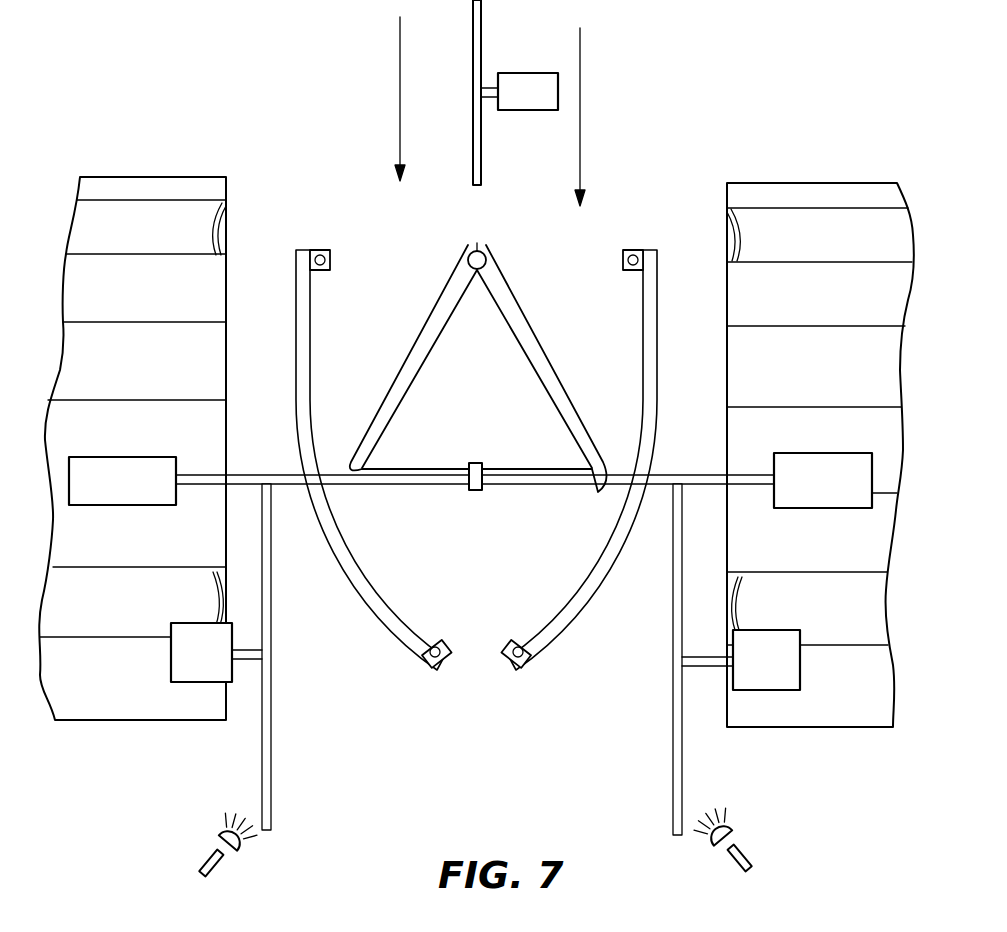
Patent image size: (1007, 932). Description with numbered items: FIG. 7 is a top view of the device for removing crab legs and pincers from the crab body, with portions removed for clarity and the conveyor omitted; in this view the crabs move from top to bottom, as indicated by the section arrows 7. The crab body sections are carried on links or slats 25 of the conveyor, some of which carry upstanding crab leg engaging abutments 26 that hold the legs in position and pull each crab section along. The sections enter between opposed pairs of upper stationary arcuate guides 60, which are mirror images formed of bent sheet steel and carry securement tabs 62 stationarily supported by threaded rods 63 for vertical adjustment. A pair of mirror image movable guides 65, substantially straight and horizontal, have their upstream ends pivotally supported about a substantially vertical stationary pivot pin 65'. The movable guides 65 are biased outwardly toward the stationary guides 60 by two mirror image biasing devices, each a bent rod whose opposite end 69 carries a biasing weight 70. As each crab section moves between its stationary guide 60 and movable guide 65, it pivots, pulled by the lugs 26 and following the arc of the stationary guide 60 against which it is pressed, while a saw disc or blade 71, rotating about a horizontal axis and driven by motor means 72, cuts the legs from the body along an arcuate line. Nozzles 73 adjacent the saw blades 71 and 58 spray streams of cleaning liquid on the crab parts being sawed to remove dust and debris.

The section line / viewing direction 7 is at (400, 78).
The links 25 is at (147, 441).
The crab leg engaging abutments 26 is at (214, 592).
The saw blade 58 is at (478, 40).
The upper stationary arcuate guides 60 is at (525, 112).
The securement tabs 62 is at (322, 252).
The threaded rods 63 is at (322, 266).
The movable guides 65 is at (478, 368).
The stationary pivot pin 65' is at (515, 253).
The opposite end of bent rod 69 is at (281, 475).
The biasing weight 70 is at (137, 494).
The saw disc or blade 71 is at (271, 785).
The motor means 72 is at (171, 661).
The nozzles 73 is at (238, 855).